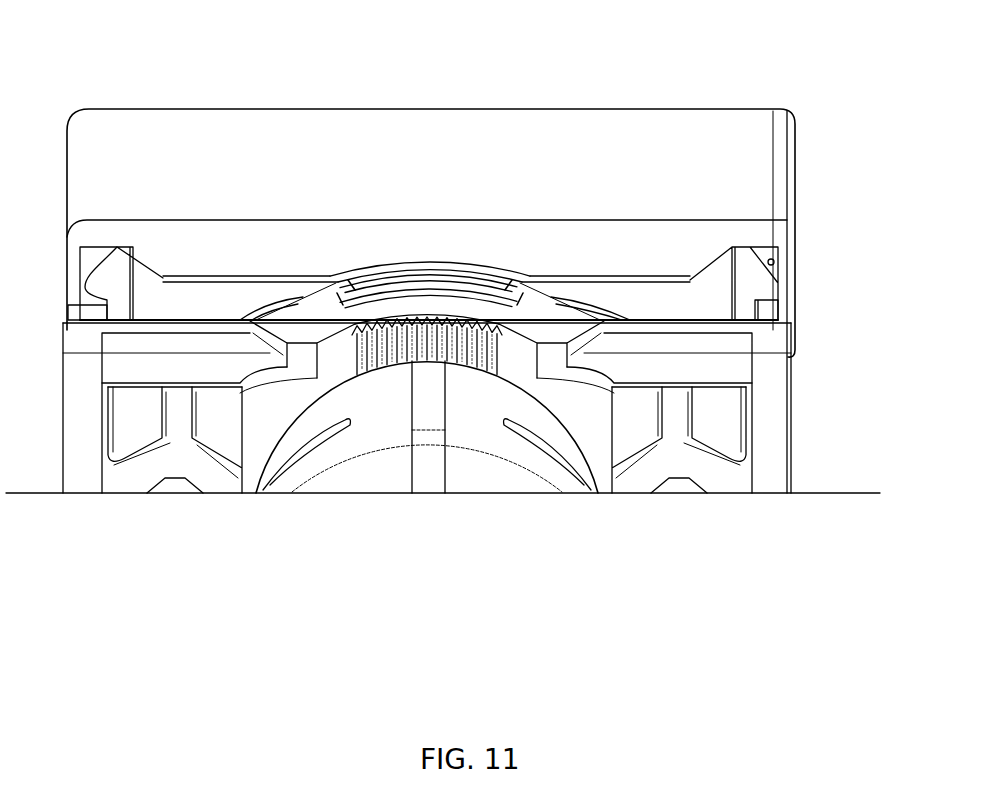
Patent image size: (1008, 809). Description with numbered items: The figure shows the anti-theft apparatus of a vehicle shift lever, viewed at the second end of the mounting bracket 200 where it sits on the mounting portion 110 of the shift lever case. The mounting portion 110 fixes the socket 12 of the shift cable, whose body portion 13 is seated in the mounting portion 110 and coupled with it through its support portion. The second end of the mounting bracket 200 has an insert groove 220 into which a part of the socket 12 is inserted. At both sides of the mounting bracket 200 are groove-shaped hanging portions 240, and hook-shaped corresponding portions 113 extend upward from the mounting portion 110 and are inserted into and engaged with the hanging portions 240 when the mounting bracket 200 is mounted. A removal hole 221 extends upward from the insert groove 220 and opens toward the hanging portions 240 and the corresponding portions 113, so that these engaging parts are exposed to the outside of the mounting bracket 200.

The mounting bracket 200 is at (590, 97).
The insert groove 220 is at (643, 282).
The removal hole 221 is at (141, 268).
The corresponding portion 113 is at (772, 266).
The hanging portion 240 is at (762, 298).
The mounting portion 110 is at (721, 435).
The socket 12 is at (450, 403).
The body portion 13 is at (530, 320).